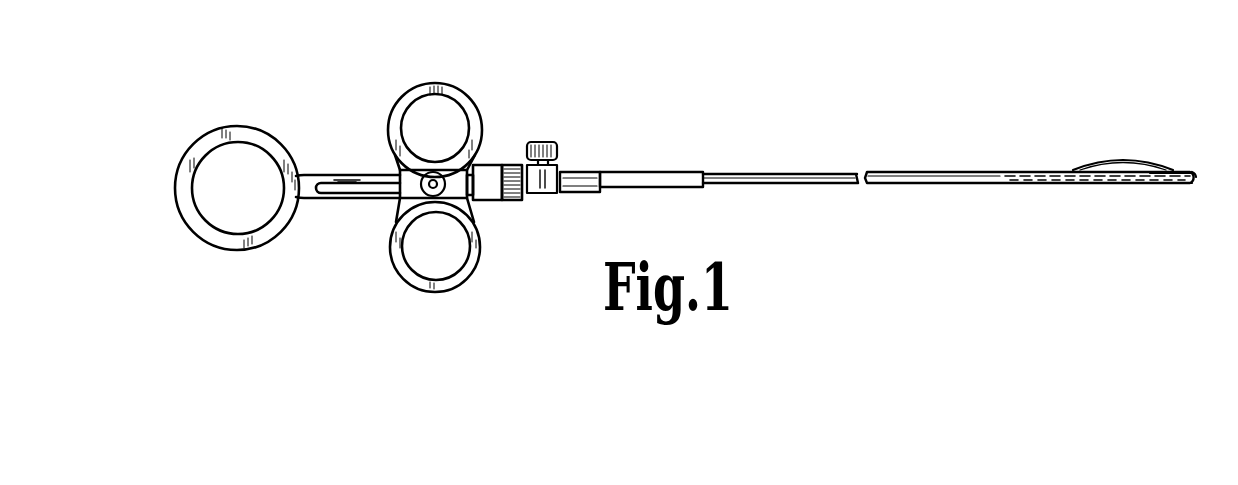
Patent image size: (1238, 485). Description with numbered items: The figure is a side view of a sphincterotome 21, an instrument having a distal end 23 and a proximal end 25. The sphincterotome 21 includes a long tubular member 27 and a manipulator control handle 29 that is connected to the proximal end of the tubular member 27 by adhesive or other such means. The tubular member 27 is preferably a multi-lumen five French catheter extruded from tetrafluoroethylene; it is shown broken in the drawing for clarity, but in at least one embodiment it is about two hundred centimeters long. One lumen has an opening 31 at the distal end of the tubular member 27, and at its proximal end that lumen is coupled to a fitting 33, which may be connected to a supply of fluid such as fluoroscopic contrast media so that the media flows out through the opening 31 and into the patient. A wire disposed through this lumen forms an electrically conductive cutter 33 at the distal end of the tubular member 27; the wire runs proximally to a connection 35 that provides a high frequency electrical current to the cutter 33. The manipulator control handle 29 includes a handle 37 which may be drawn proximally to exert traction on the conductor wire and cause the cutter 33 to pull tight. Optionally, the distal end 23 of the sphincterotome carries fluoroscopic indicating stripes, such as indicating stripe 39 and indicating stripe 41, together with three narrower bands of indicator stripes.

The sphincterotome 21 is at (697, 142).
The distal end 23 is at (1156, 210).
The proximal end 25 is at (609, 194).
The tubular member 27 is at (823, 172).
The manipulator control handle 29 is at (493, 114).
The opening 31 is at (1201, 172).
The fitting / electrically conductive cutter 33 is at (558, 145).
The connection 35 is at (437, 176).
The handle 37 is at (395, 258).
The indicating stripe 39 is at (1180, 183).
The indicating stripe 41 is at (1042, 183).